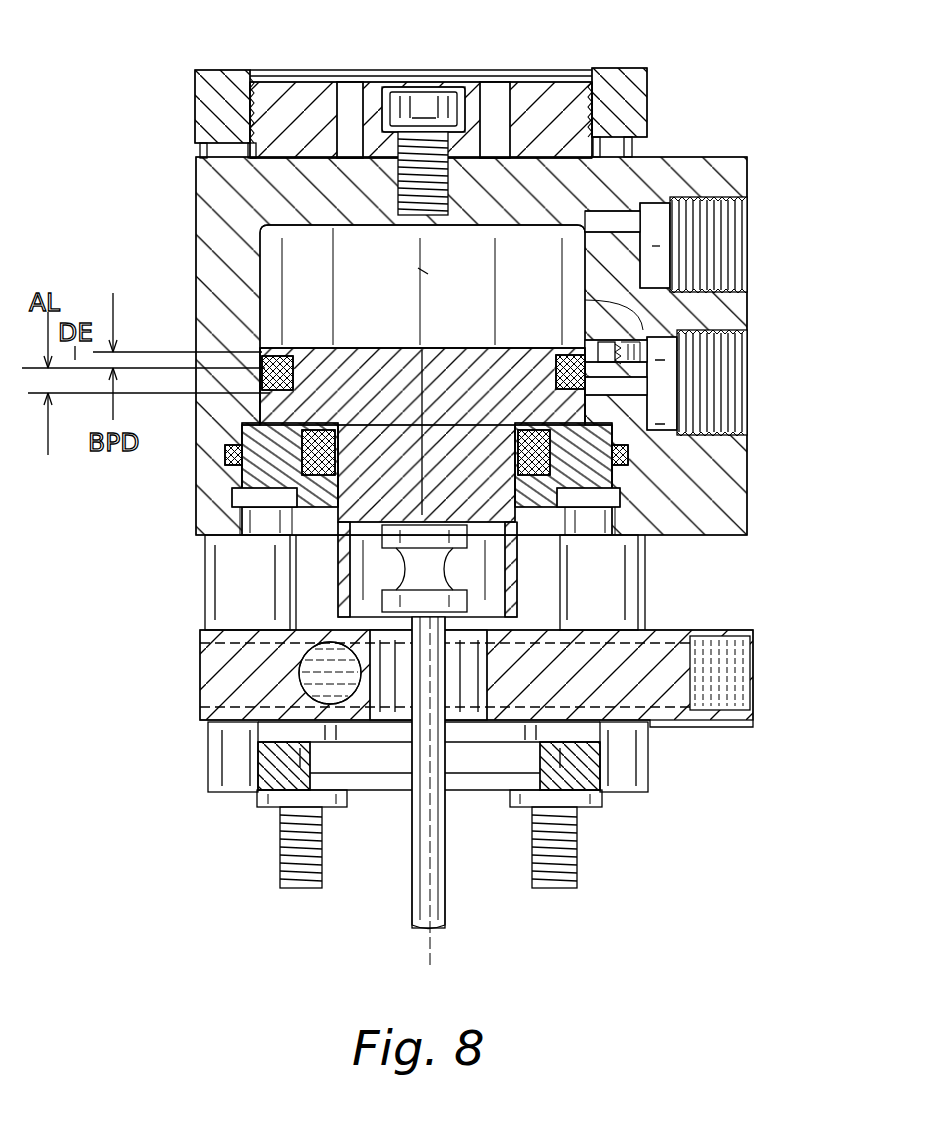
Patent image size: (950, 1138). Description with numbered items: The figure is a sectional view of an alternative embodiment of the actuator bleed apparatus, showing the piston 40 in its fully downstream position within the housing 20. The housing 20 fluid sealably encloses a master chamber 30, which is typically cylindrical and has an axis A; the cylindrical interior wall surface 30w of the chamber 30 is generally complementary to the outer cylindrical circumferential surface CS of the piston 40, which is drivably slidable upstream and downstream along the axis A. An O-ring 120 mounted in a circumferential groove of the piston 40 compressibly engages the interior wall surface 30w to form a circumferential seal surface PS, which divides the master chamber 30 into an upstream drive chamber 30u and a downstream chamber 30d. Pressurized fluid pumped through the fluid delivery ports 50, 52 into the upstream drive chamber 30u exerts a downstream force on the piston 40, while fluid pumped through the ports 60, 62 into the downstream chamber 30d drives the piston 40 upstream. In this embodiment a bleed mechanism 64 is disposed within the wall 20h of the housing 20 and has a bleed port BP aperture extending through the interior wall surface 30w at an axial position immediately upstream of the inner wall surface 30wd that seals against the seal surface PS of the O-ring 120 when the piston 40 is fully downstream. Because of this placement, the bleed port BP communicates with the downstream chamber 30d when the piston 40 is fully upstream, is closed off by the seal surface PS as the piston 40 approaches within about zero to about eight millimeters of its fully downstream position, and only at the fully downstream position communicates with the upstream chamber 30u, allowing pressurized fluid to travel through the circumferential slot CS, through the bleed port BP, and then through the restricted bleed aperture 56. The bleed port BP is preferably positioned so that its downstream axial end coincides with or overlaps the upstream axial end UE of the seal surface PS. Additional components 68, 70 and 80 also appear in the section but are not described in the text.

The housing 20 is at (458, 305).
The wall of cylinder 20h is at (725, 162).
The master chamber 30 is at (447, 317).
The upstream drive chamber 30u is at (520, 235).
The interior wall surface 30w is at (260, 262).
The downstream chamber 30d is at (552, 517).
The inner wall surface 30wd is at (582, 495).
The piston 40 is at (262, 360).
The fluid delivery port 50 is at (657, 220).
The fluid delivery port 52 is at (605, 222).
The restricted bleed aperture 56 is at (615, 355).
The port 60 is at (635, 413).
The port 62 is at (633, 413).
The bleed mechanism 64 is at (643, 330).
The piston rod 68 is at (446, 897).
The mounting plate 70 is at (200, 672).
The bracket plate 80 is at (208, 773).
The O-ring 120 is at (240, 428).
The axis A is at (432, 273).
The circumferential surface CS is at (622, 288).
The bleed port BP is at (657, 283).
The circumferential seal surface PS is at (655, 393).
The upstream axial end of seal surface UE is at (215, 392).